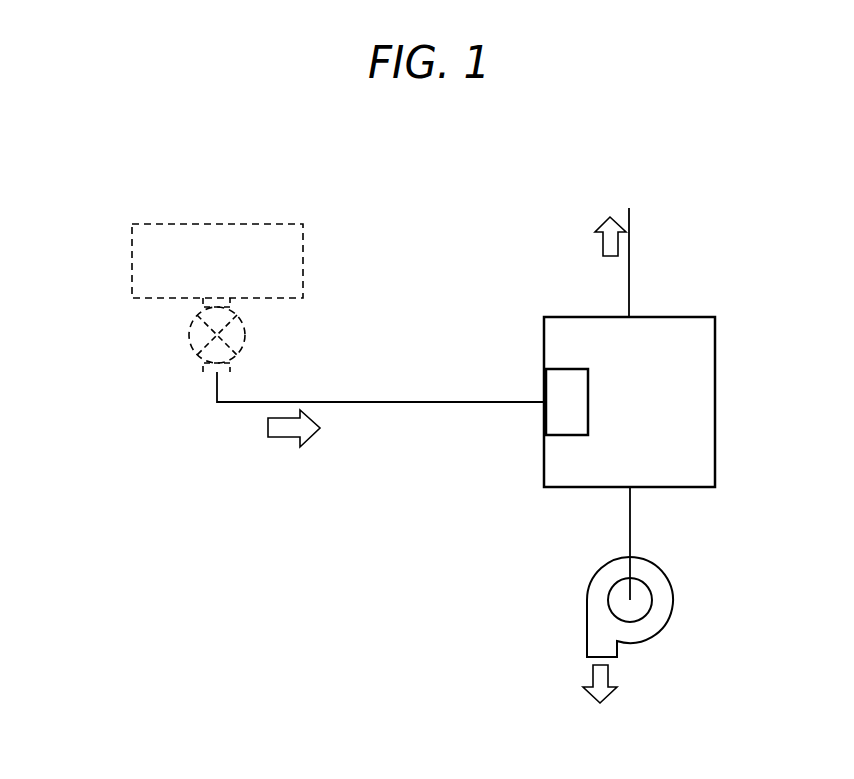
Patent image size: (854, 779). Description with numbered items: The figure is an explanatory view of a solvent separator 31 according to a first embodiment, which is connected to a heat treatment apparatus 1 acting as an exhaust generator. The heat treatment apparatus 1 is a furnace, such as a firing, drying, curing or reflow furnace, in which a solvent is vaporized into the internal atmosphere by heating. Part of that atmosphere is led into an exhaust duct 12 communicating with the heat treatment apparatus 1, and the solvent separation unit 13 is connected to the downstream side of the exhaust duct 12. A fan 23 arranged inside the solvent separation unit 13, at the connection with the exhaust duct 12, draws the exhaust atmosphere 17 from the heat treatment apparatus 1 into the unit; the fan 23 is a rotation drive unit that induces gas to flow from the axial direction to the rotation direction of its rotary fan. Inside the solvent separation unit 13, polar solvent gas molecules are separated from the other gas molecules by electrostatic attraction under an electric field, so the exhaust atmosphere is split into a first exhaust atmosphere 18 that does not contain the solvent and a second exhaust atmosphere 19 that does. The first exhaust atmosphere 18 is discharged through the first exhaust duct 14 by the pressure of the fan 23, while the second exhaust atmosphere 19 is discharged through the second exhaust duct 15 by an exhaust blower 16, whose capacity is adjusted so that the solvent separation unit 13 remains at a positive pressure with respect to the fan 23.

The heat treatment apparatus 1 is at (147, 257).
The exhaust duct 12 is at (228, 403).
The solvent separation unit 13 is at (700, 378).
The first exhaust duct 14 is at (630, 277).
The second exhaust duct 15 is at (630, 522).
The exhaust blower 16 is at (660, 608).
The exhaust atmosphere 17 is at (285, 437).
The first exhaust atmosphere 18 is at (603, 248).
The second exhaust atmosphere 19 is at (608, 673).
The fan 23 is at (563, 435).
The solvent separator 31 is at (673, 200).